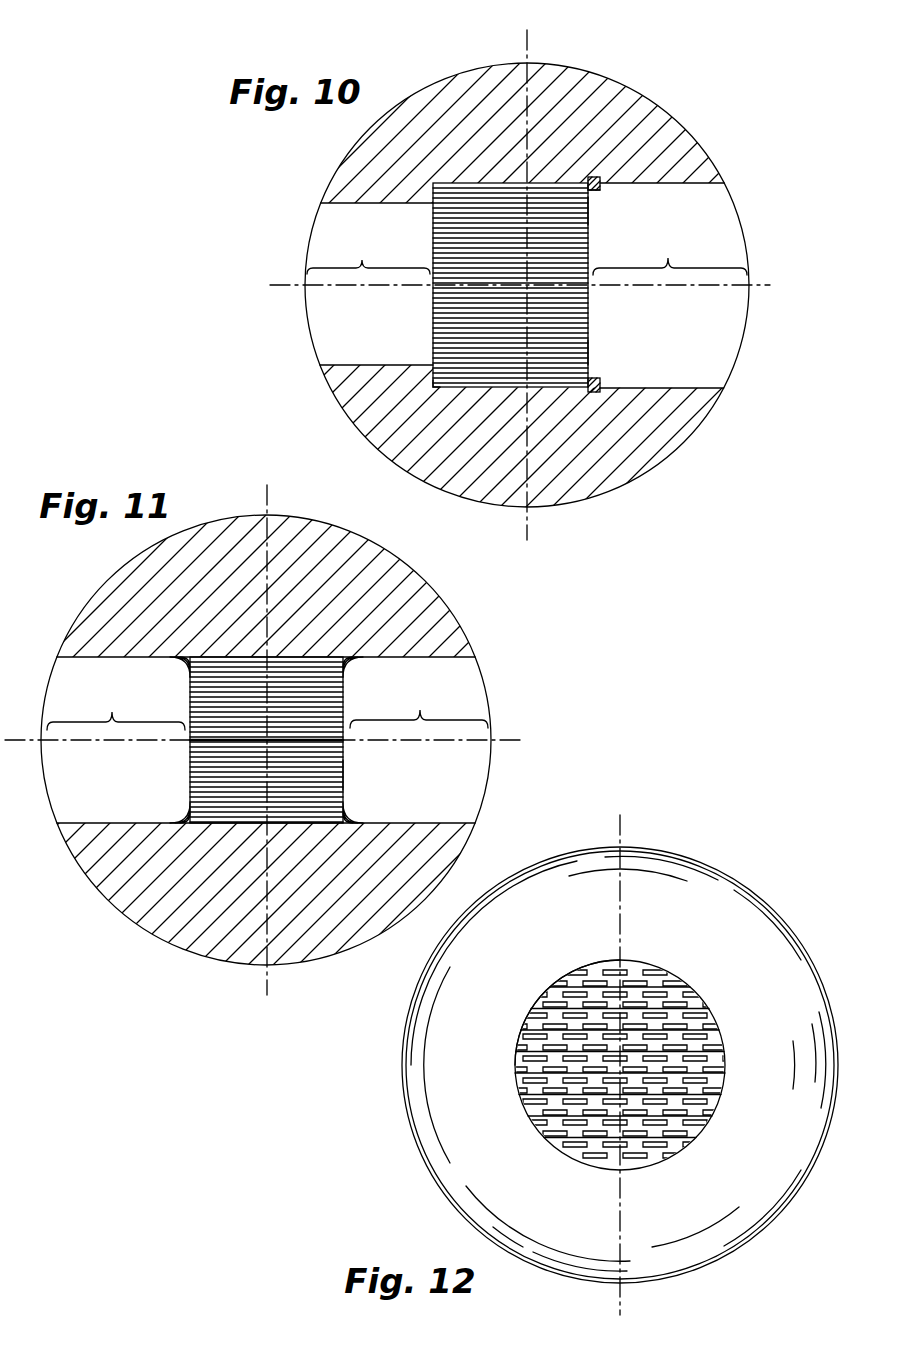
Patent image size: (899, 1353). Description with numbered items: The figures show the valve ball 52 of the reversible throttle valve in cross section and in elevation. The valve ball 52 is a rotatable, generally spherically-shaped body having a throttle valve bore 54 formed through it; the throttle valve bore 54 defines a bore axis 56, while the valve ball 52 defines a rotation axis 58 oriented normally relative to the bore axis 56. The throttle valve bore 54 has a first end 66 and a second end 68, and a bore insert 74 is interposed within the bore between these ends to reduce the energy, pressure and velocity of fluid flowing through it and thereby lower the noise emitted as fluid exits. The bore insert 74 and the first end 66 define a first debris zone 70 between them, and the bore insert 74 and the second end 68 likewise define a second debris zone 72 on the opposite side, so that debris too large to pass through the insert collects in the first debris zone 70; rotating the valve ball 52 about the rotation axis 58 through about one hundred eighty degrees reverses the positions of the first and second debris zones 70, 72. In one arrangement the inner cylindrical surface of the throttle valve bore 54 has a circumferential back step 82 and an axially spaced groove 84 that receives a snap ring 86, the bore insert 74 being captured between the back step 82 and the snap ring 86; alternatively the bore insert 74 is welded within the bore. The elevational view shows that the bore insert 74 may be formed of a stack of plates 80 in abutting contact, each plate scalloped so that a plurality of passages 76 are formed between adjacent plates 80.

In FIG. 10, the valve ball 52 is at (620, 106).
In FIG. 11, the valve ball 52 is at (353, 556).
In FIG. 12, the valve ball 52 is at (735, 1212).
In FIG. 10, the throttle valve bore 54 is at (338, 366).
In FIG. 11, the throttle valve bore 54 is at (70, 823).
In FIG. 12, the throttle valve bore 54 is at (563, 1143).
In FIG. 10, the bore axis 56 is at (737, 288).
In FIG. 11, the bore axis 56 is at (480, 745).
In FIG. 10, the rotation axis 58 is at (520, 271).
In FIG. 11, the rotation axis 58 is at (262, 726).
In FIG. 12, the rotation axis 58 is at (598, 1048).
In FIG. 10, the first end 66 is at (748, 288).
In FIG. 11, the first end 66 is at (490, 742).
In FIG. 10, the second end 68 is at (303, 288).
In FIG. 10, the first debris zone 70 is at (670, 253).
In FIG. 11, the first debris zone 70 is at (419, 705).
In FIG. 10, the second debris zone 72 is at (368, 252).
In FIG. 11, the second debris zone 72 is at (116, 707).
In FIG. 12, the bore insert 74 is at (577, 975).
In FIG. 12, the passages 76 is at (560, 1136).
In FIG. 10, the plates 80 is at (612, 347).
In FIG. 11, the plates 80 is at (343, 766).
In FIG. 12, the plates 80 is at (518, 1038).
In FIG. 10, the back step 82 is at (433, 383).
In FIG. 10, the groove 84 is at (598, 393).
In FIG. 10, the snap ring 86 is at (592, 393).